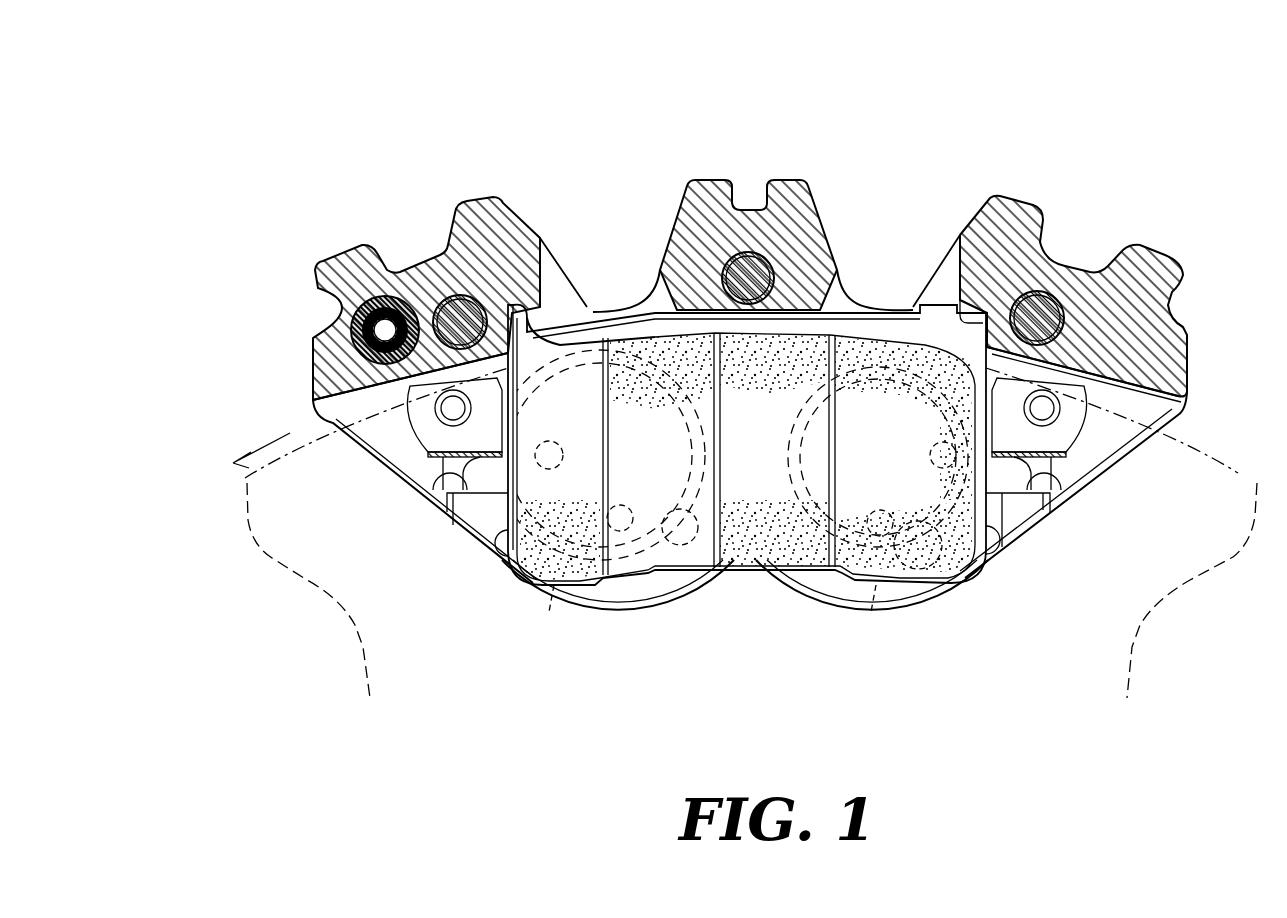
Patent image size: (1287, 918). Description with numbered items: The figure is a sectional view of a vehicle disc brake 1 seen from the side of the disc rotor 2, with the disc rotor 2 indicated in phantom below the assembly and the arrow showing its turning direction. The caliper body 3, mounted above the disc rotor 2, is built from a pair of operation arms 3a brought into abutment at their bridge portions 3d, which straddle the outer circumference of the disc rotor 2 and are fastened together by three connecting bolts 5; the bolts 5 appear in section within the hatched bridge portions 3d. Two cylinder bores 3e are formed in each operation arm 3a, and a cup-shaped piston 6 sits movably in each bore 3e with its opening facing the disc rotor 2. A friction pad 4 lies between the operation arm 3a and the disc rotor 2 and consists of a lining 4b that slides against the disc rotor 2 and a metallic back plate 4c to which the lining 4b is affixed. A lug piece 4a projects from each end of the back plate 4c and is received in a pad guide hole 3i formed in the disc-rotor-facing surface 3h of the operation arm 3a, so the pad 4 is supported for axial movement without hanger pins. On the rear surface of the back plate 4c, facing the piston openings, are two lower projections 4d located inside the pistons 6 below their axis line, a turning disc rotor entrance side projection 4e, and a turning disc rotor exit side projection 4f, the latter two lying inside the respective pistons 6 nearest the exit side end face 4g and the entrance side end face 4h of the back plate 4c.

The vehicle disc brake 1 is at (758, 88).
The disc rotor 2 is at (1212, 452).
The caliper body 3 is at (750, 390).
The operation arm 3a is at (890, 595).
The bridge portion 3d is at (795, 205).
The cylinder bore 3e is at (687, 565).
The disc-rotor-facing surface 3h is at (1107, 447).
The pad guide hole 3i is at (440, 490).
The friction pad 4 is at (749, 484).
The lug piece 4a is at (505, 463).
The lining 4b is at (746, 562).
The back plate 4c is at (767, 568).
The lower projection 4d is at (622, 507).
The turning disc rotor entrance side projection 4e is at (556, 446).
The turning disc rotor exit side projection 4f is at (930, 456).
The turning disc rotor exit side end face 4g is at (495, 548).
The turning disc rotor entrance side end face 4h is at (997, 545).
The connecting bolt 5 is at (487, 315).
The piston 6 is at (550, 612).